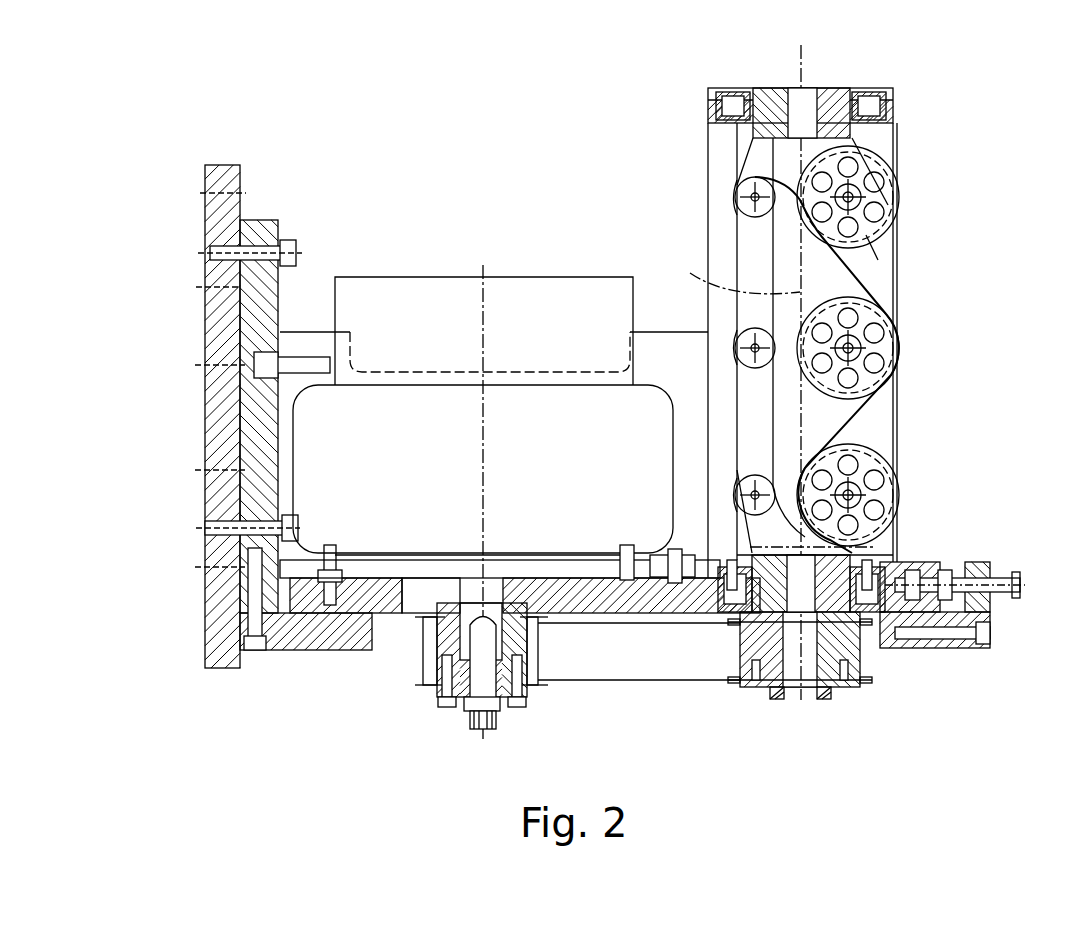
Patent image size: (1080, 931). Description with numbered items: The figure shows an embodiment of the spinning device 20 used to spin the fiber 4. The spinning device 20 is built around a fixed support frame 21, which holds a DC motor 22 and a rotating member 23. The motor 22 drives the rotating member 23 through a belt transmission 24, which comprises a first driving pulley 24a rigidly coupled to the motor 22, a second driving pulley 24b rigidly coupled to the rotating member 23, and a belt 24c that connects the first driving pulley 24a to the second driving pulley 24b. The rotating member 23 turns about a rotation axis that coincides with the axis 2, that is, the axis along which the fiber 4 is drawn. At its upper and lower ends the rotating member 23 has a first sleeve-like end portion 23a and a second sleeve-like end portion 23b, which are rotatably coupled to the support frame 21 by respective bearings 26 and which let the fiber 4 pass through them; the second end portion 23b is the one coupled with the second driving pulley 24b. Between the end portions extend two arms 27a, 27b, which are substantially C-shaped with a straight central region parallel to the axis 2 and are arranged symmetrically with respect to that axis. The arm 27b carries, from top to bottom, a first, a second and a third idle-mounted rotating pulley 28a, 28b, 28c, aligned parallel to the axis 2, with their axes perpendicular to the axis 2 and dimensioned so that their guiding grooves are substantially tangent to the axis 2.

The spinning device 20 is at (320, 108).
The support frame 21 is at (210, 332).
The DC motor 22 is at (445, 305).
The rotating member 23 is at (912, 138).
The first sleeve-like end portion 23a is at (808, 95).
The second sleeve-like end portion 23b is at (812, 702).
The belt transmission 24 is at (652, 712).
The first driving pulley 24a is at (540, 700).
The second driving pulley 24b is at (750, 695).
The belt 24c is at (596, 690).
The bearings 26 is at (762, 95).
The arm 27a is at (750, 242).
The arm 27b is at (880, 253).
The first idle-mounted rotating pulley 28a is at (898, 185).
The second idle-mounted rotating pulley 28b is at (898, 340).
The third idle-mounted rotating pulley 28c is at (898, 473).
The fiber 4 is at (800, 50).
The axis 2 is at (730, 272).